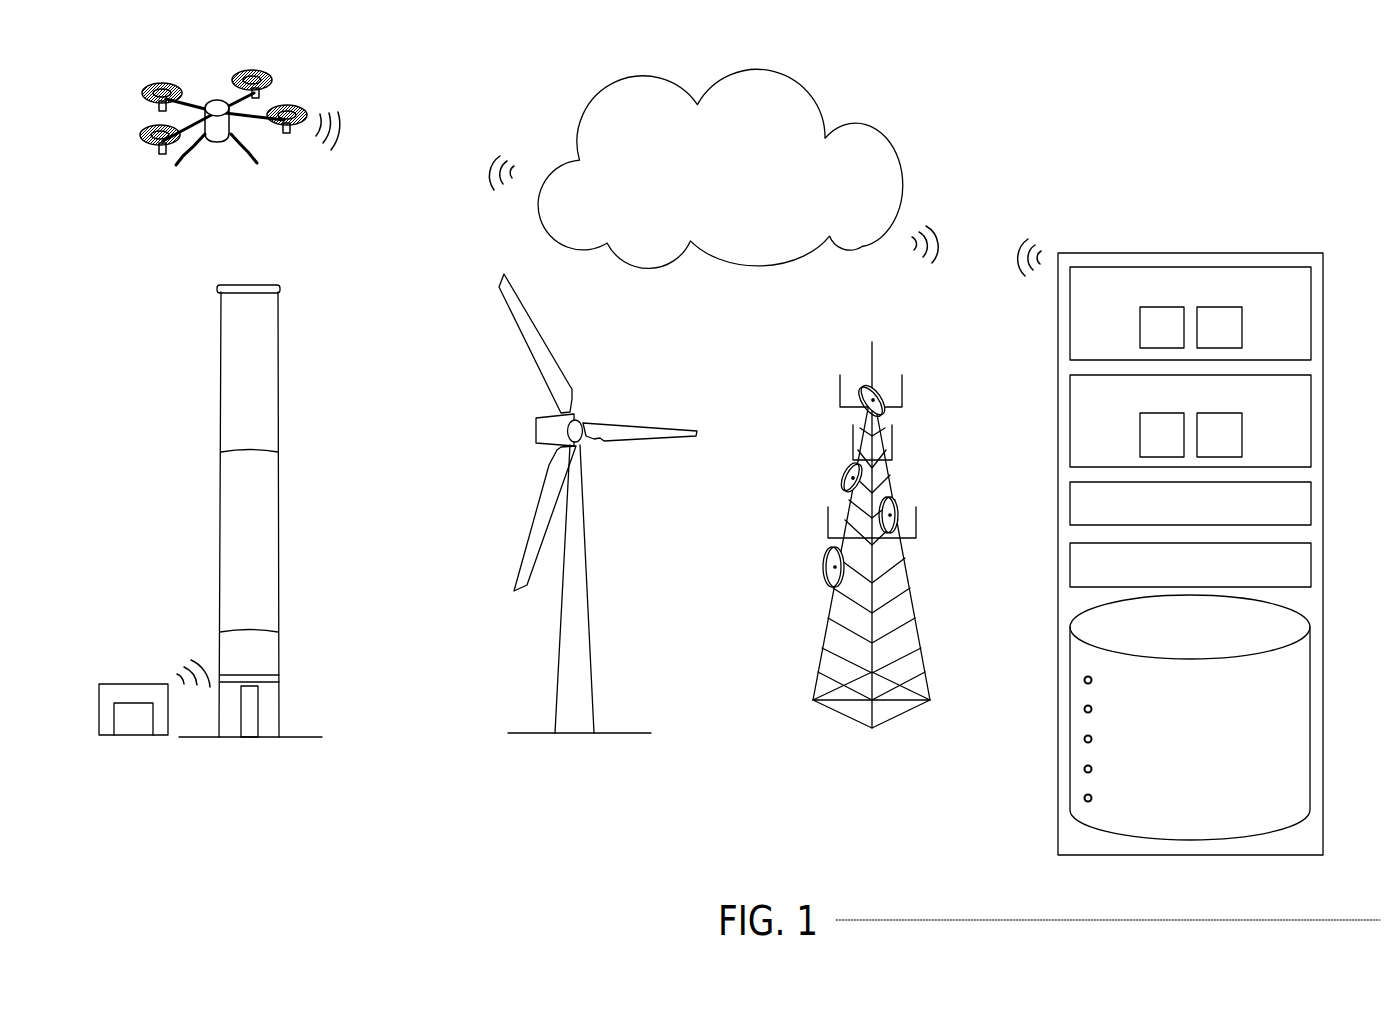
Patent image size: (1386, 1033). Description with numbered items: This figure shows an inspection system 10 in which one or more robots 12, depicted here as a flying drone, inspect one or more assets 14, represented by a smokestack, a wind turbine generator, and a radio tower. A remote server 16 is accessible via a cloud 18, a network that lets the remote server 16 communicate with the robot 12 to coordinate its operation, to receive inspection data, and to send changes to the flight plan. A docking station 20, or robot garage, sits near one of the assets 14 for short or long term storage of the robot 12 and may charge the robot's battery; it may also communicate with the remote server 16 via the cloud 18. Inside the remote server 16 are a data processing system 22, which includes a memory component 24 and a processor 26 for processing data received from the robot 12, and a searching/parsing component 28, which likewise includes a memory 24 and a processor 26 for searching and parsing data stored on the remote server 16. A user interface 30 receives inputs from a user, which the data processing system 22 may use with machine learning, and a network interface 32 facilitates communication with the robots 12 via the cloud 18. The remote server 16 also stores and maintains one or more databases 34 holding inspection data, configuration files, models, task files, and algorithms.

The inspection system 10 is at (977, 193).
The robot 12 is at (303, 106).
The asset 14 is at (279, 369).
The remote server 16 is at (1186, 252).
The cloud 18 is at (732, 185).
The docking station 20 is at (123, 683).
The data processing system 22 is at (1313, 318).
The memory component 24 is at (1139, 329).
The processor 26 is at (1243, 326).
The searching/parsing component 28 is at (1313, 418).
The user interface 30 is at (1313, 503).
The network interface 32 is at (1313, 563).
The database 34 is at (1313, 681).